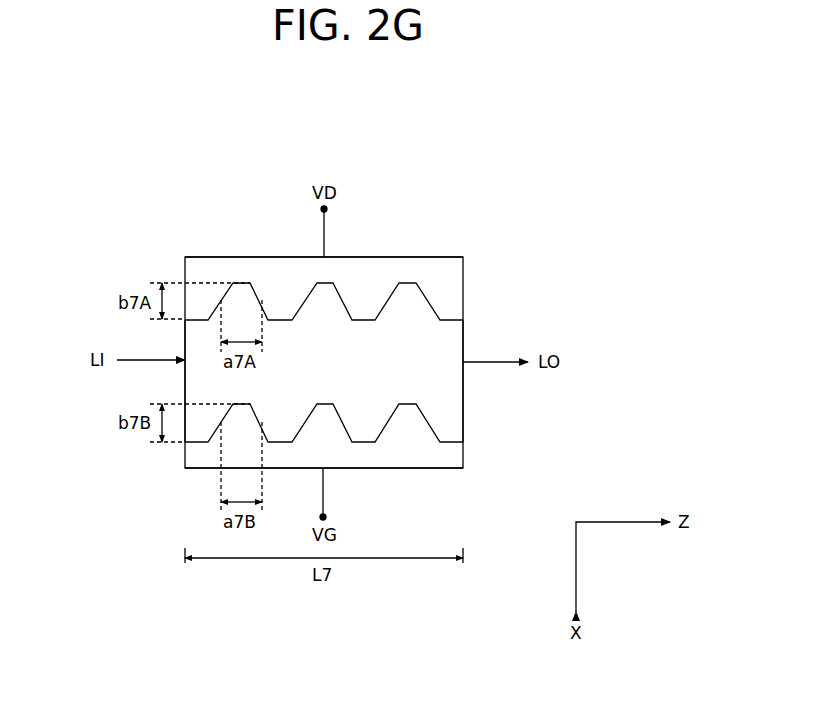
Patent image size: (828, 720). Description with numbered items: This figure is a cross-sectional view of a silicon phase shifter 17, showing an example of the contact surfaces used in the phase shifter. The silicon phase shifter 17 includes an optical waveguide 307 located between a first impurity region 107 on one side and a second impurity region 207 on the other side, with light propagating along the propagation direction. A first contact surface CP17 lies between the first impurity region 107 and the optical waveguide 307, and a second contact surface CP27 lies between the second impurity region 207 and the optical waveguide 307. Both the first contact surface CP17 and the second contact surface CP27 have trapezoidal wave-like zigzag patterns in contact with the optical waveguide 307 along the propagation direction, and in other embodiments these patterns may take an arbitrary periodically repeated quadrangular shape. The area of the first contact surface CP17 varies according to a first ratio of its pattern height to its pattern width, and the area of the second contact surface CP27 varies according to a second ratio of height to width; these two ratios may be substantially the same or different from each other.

The silicon phase shifter 17 is at (334, 127).
The first impurity region 107 is at (393, 262).
The second impurity region 207 is at (452, 455).
The optical waveguide 307 is at (452, 340).
The first contact surface CP17 is at (445, 297).
The second contact surface CP27 is at (445, 433).